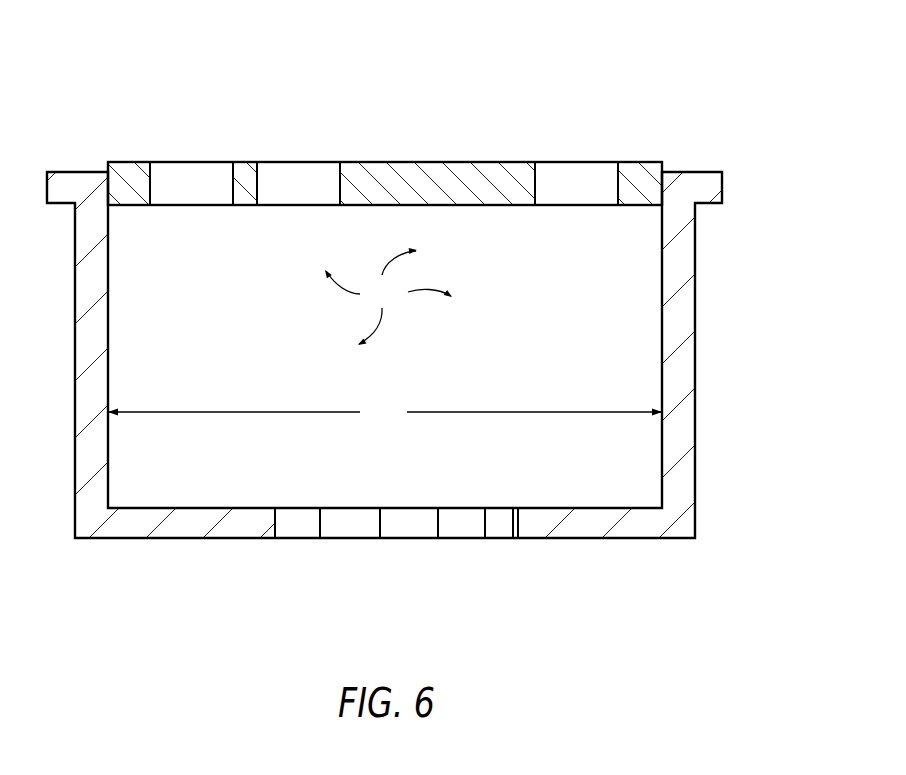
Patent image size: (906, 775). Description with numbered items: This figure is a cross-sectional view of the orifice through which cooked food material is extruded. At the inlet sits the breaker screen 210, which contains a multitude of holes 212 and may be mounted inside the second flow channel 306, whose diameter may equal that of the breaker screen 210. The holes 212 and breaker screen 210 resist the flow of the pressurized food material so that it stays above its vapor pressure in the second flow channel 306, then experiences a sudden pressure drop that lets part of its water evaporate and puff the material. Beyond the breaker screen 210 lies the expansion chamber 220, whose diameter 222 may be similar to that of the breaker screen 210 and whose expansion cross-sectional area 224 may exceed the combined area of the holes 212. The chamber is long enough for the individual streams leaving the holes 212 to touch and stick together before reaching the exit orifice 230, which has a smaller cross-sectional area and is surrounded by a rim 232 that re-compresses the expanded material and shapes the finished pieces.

The breaker screen 210 is at (636, 172).
The holes 212 is at (568, 172).
The expansion chamber 220 is at (562, 302).
The diameter of the expansion chamber 222 is at (385, 412).
The expansion cross-sectional area 224 is at (388, 296).
The exit orifice 230 is at (453, 540).
The rim 232 is at (346, 522).
The second flow channel 306 is at (621, 366).